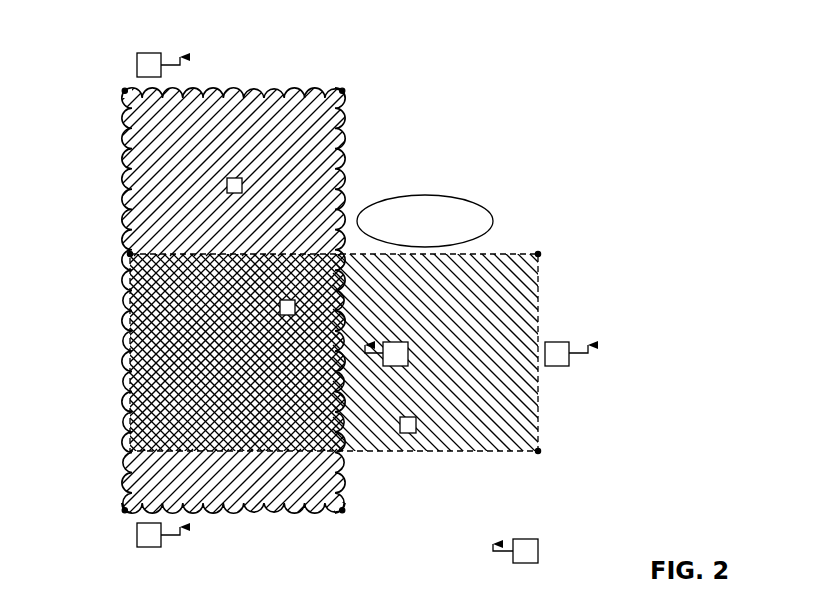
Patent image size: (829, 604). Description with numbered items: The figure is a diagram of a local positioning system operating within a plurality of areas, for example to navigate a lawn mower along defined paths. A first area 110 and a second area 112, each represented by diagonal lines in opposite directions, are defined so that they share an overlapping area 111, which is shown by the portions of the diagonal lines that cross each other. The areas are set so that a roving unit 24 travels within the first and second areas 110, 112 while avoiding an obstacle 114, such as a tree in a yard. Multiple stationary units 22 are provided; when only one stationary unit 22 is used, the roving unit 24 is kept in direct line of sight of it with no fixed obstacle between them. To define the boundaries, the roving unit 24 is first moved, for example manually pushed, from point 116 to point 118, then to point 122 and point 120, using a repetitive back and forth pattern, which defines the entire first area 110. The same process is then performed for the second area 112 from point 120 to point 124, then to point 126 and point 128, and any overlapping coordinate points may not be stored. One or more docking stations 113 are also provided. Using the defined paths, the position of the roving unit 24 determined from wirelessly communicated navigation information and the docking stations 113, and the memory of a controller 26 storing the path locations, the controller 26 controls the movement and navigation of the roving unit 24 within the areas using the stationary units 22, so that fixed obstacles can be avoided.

The stationary unit 22 is at (148, 53).
The roving unit 24 is at (408, 348).
The controller 26 is at (538, 548).
The first area 110 is at (538, 308).
The overlapping area 111 is at (252, 364).
The second area 112 is at (347, 172).
The docking station 113 is at (232, 178).
The obstacle 114 is at (493, 222).
The point 116 is at (538, 451).
The point 118 is at (538, 254).
The point 120 is at (125, 510).
The point 122 is at (130, 254).
The point 124 is at (125, 91).
The point 126 is at (342, 91).
The point 128 is at (342, 510).